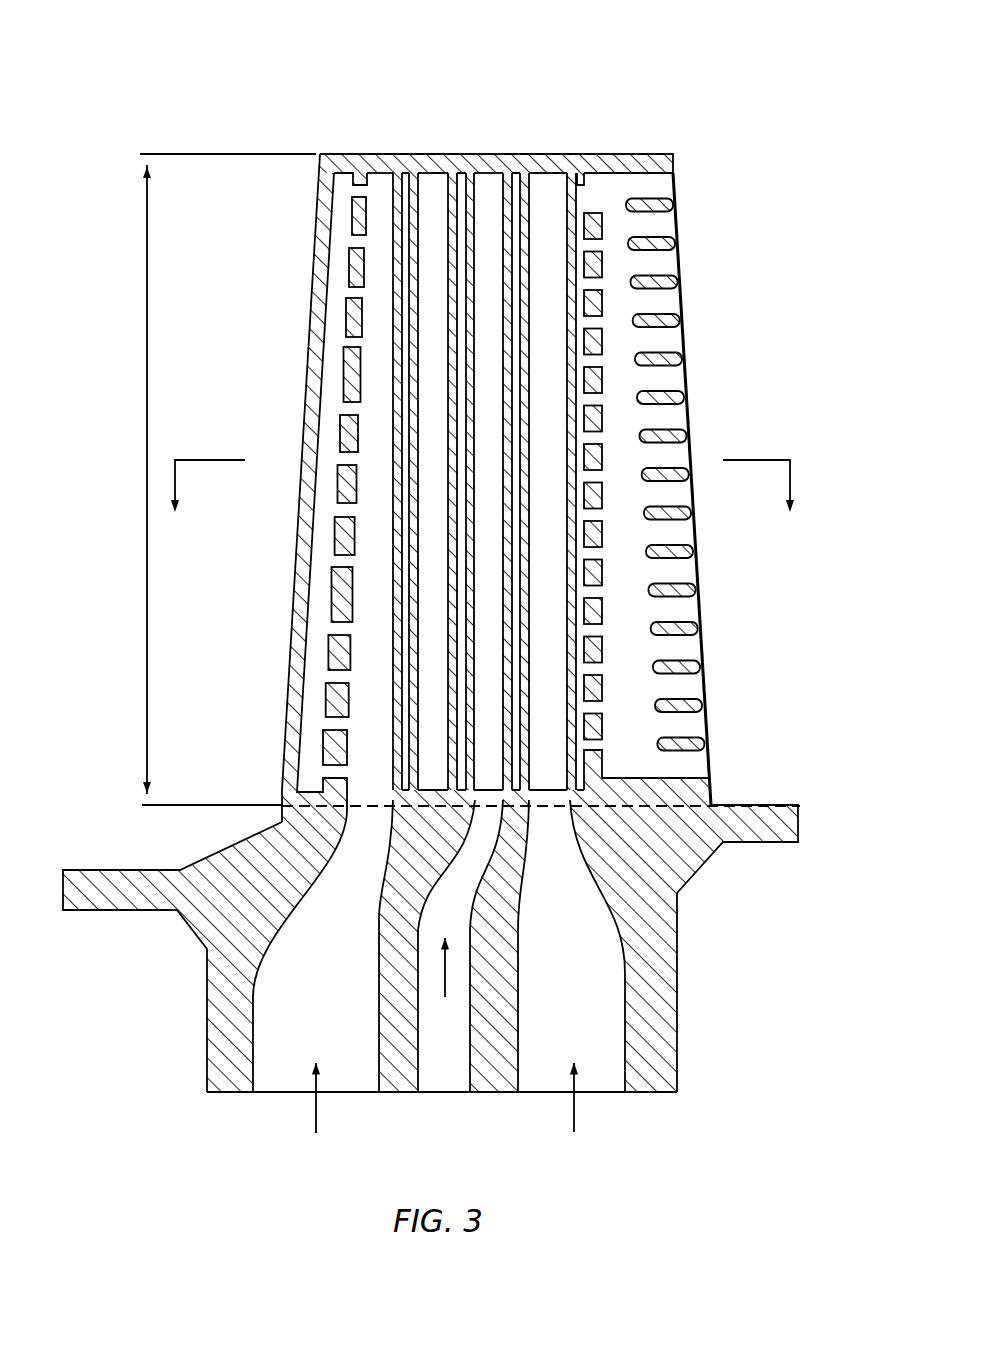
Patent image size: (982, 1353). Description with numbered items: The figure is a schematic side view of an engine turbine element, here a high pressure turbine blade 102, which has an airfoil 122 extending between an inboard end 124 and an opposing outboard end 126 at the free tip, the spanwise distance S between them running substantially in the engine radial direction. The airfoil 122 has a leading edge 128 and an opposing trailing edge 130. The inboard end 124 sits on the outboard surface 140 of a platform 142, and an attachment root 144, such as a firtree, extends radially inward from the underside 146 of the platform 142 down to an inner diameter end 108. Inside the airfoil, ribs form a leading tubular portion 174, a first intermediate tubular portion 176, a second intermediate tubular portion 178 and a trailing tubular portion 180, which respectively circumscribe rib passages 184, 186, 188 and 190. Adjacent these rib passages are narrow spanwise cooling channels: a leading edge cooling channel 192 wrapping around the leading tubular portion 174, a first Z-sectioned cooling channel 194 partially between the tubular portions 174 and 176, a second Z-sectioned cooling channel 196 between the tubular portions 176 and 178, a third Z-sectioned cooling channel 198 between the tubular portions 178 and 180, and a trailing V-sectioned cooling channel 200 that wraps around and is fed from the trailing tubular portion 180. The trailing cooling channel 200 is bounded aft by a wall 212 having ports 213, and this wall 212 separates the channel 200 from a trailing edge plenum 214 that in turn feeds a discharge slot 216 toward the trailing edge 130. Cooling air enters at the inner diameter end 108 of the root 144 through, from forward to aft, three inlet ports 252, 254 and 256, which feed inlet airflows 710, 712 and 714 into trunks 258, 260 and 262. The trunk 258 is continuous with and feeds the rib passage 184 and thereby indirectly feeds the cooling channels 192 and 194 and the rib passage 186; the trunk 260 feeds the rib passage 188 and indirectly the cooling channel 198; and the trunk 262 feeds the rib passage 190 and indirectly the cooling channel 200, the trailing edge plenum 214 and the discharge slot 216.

The blade 102 is at (282, 88).
The inner diameter end 108 is at (652, 1093).
The airfoil 122 is at (719, 350).
The inboard end 124 is at (718, 847).
The outboard end 126 is at (342, 154).
The leading edge 128 is at (305, 330).
The trailing edge 130 is at (662, 205).
The outboard surface 140 is at (713, 840).
The platform 142 is at (228, 862).
The attachment root 144 is at (710, 1030).
The underside 146 is at (176, 935).
The leading tubular portion 174 is at (397, 407).
The first intermediate tubular portion 176 is at (450, 713).
The second intermediate tubular portion 178 is at (468, 727).
The trailing tubular portion 180 is at (523, 655).
The rib passage 184 is at (373, 593).
The rib passage 186 is at (435, 195).
The rib passage 188 is at (487, 186).
The rib passage 190 is at (549, 295).
The leading edge cooling channel 192 is at (321, 535).
The first Z-sectioned cooling channel 194 is at (404, 242).
The second Z-sectioned cooling channel 196 is at (460, 178).
The third Z-sectioned cooling channel 198 is at (517, 195).
The trailing V-sectioned cooling channel 200 is at (581, 208).
The wall 212 is at (597, 420).
The ports 213 is at (597, 398).
The trailing edge plenum 214 is at (618, 229).
The discharge slot 216 is at (642, 186).
The inlet port 252 is at (281, 1100).
The inlet port 254 is at (428, 1100).
The inlet port 256 is at (546, 1100).
The trunk 258 is at (285, 1020).
The trunk 260 is at (437, 1022).
The trunk 262 is at (590, 997).
The inlet airflow 710 is at (316, 1115).
The inlet airflow 712 is at (445, 978).
The inlet airflow 714 is at (575, 1112).